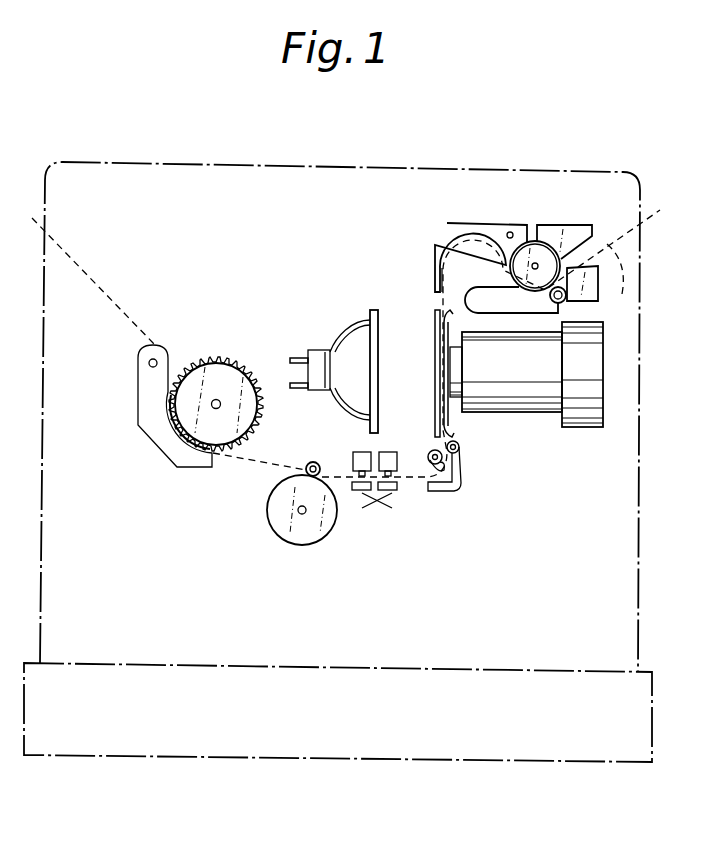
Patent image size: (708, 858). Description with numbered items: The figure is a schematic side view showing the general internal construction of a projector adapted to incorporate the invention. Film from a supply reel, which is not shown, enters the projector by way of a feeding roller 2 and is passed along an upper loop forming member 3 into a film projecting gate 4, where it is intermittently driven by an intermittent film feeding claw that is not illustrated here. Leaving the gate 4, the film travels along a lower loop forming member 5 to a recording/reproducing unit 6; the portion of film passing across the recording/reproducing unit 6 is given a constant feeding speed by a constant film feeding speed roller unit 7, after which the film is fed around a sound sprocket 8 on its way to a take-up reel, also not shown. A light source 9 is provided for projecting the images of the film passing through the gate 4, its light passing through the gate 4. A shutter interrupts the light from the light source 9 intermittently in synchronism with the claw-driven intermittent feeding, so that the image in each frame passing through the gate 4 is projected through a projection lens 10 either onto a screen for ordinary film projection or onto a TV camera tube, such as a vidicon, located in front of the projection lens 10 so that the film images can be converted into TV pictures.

The feeding roller 2 is at (547, 258).
The upper loop forming member 3 is at (475, 228).
The film projecting gate 4 is at (435, 323).
The lower loop forming member 5 is at (451, 493).
The recording/reproducing unit 6 is at (377, 450).
The constant film feeding speed roller unit 7 is at (326, 475).
The sound sprocket 8 is at (225, 370).
The light source 9 is at (350, 347).
The projection lens 10 is at (522, 405).